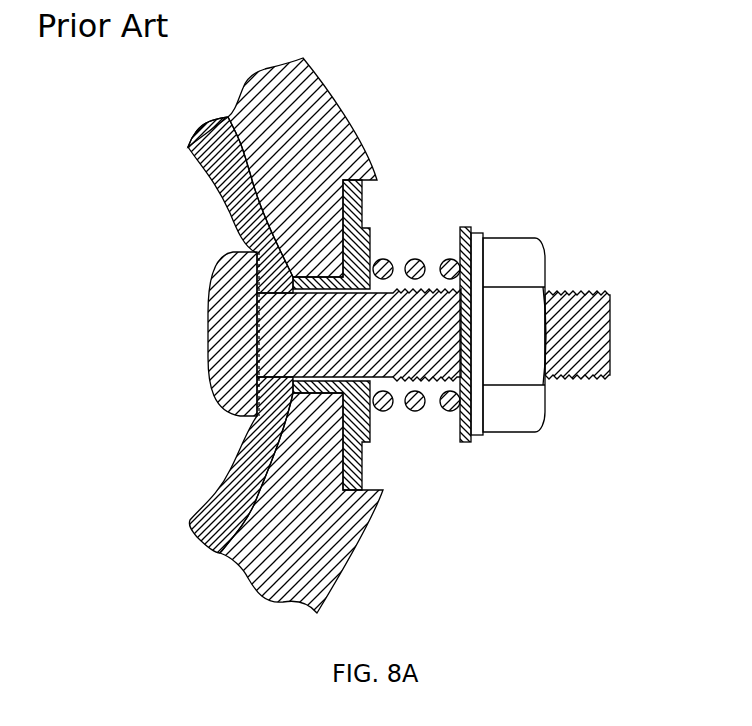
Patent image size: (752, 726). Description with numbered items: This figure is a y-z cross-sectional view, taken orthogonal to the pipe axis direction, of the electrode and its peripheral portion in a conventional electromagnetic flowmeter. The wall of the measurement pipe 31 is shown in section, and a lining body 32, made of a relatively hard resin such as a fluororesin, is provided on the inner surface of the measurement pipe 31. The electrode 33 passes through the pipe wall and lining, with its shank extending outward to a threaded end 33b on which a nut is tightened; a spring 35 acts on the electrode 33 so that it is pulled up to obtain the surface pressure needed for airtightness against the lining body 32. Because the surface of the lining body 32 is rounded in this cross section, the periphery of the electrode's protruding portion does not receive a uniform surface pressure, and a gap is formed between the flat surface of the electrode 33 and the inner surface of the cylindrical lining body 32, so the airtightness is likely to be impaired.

The measurement pipe 31 is at (335, 95).
The lining body 32 is at (230, 206).
The electrode 33 is at (230, 362).
The threaded end of bolt 33b is at (598, 293).
The spring 35 is at (415, 259).